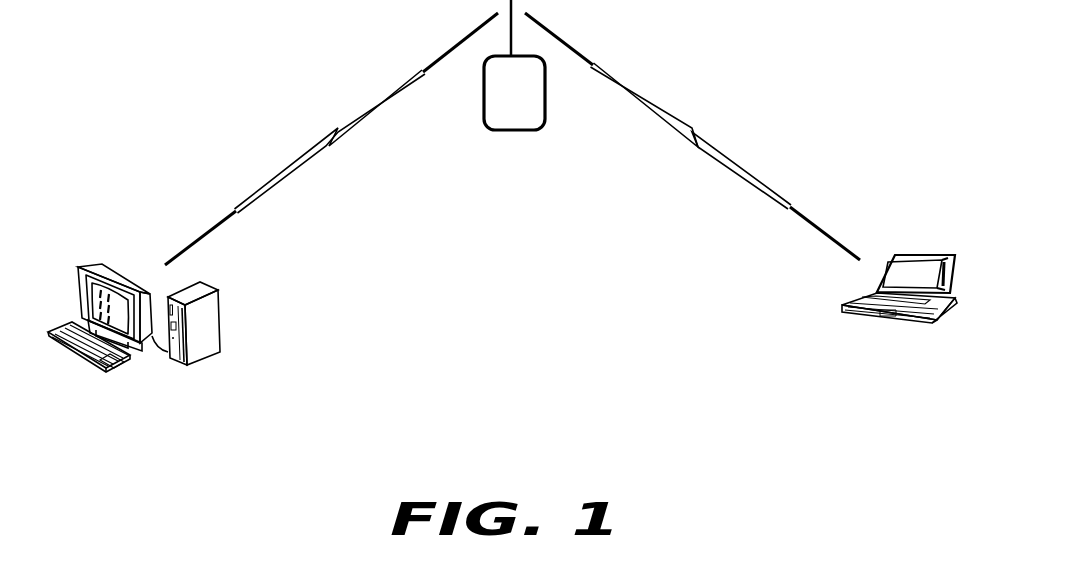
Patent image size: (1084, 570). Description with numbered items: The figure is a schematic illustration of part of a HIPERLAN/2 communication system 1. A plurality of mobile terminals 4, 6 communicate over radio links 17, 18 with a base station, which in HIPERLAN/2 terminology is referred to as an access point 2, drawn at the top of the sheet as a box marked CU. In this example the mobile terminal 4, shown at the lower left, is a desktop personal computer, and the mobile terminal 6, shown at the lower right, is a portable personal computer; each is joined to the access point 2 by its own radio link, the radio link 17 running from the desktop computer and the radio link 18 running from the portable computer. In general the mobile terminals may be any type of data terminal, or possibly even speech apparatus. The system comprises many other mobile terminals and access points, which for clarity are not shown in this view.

The HIPERLAN/2 communication system 1 is at (241, 452).
The access point 2 is at (512, 131).
The mobile terminal 4 is at (77, 290).
The mobile terminal 6 is at (843, 303).
The radio link 17 is at (253, 196).
The radio link 18 is at (778, 196).